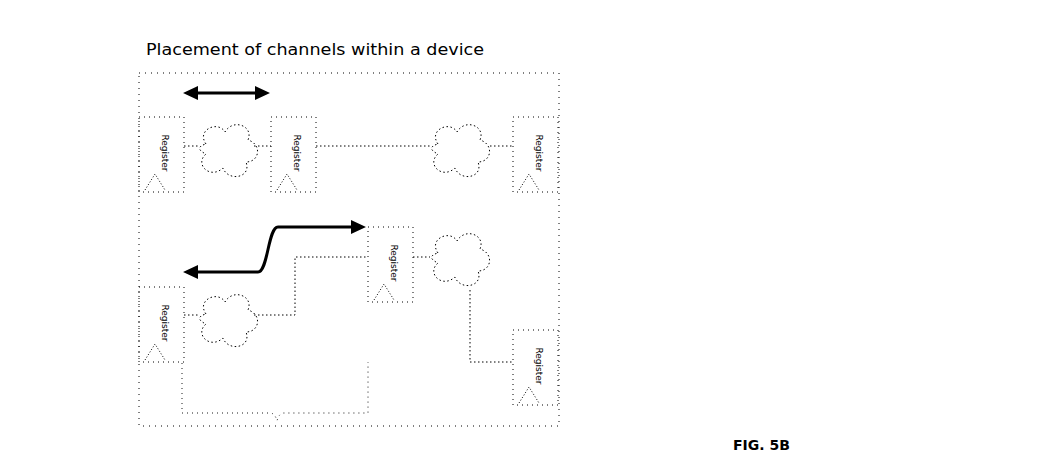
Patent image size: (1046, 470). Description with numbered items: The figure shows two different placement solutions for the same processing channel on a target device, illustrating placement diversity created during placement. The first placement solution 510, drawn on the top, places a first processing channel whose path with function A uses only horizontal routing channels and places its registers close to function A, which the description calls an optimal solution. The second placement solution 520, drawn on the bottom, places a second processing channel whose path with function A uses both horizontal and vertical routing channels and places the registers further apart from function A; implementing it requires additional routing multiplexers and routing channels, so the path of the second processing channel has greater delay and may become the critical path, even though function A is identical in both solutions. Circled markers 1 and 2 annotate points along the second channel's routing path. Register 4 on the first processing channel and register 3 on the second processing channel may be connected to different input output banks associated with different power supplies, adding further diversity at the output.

The first placement solution 510 is at (66, 150).
The second placement solution 520 is at (86, 315).
The routing segment from logic A to intermediate register 1 is at (311, 286).
The routing segment from logic B to output register 2 is at (476, 326).
The register 3 is at (535, 352).
The register 4 is at (535, 168).